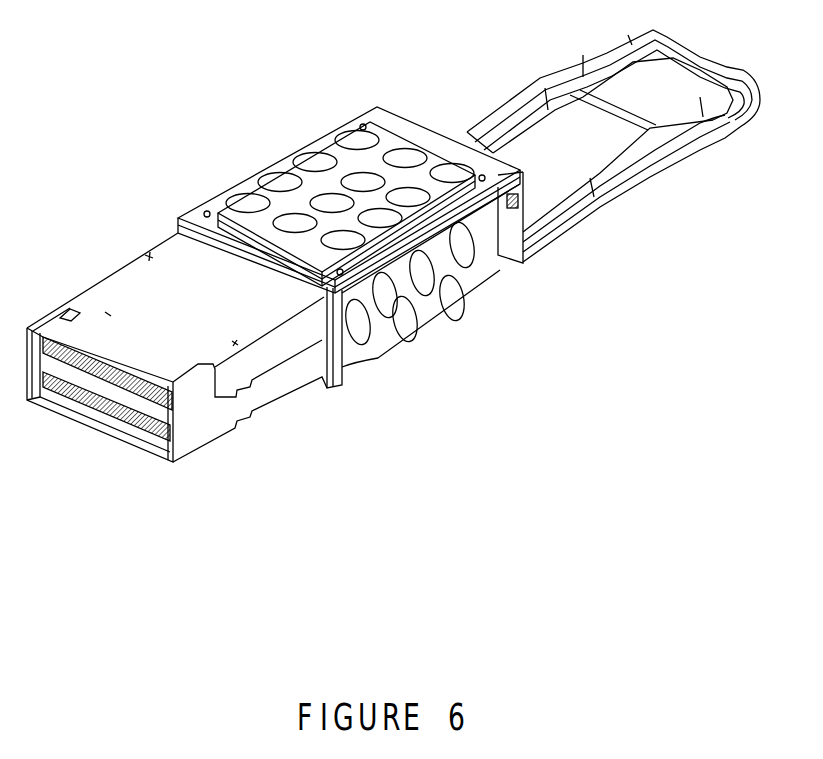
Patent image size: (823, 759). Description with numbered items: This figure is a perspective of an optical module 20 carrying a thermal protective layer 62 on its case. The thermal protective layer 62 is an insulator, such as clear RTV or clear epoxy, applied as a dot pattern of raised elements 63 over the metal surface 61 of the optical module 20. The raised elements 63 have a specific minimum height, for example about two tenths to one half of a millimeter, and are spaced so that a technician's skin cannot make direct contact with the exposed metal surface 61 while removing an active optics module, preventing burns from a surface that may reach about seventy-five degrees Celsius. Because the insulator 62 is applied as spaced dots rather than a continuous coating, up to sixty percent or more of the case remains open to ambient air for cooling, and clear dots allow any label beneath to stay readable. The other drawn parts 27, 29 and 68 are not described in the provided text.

The connector housing 20 is at (127, 290).
The contact slots 27 is at (97, 415).
The latch bail 29 is at (530, 85).
The side wall 61 is at (368, 346).
The top holes 62 is at (337, 138).
The side holes 63 is at (452, 250).
The top plate 68 is at (283, 162).